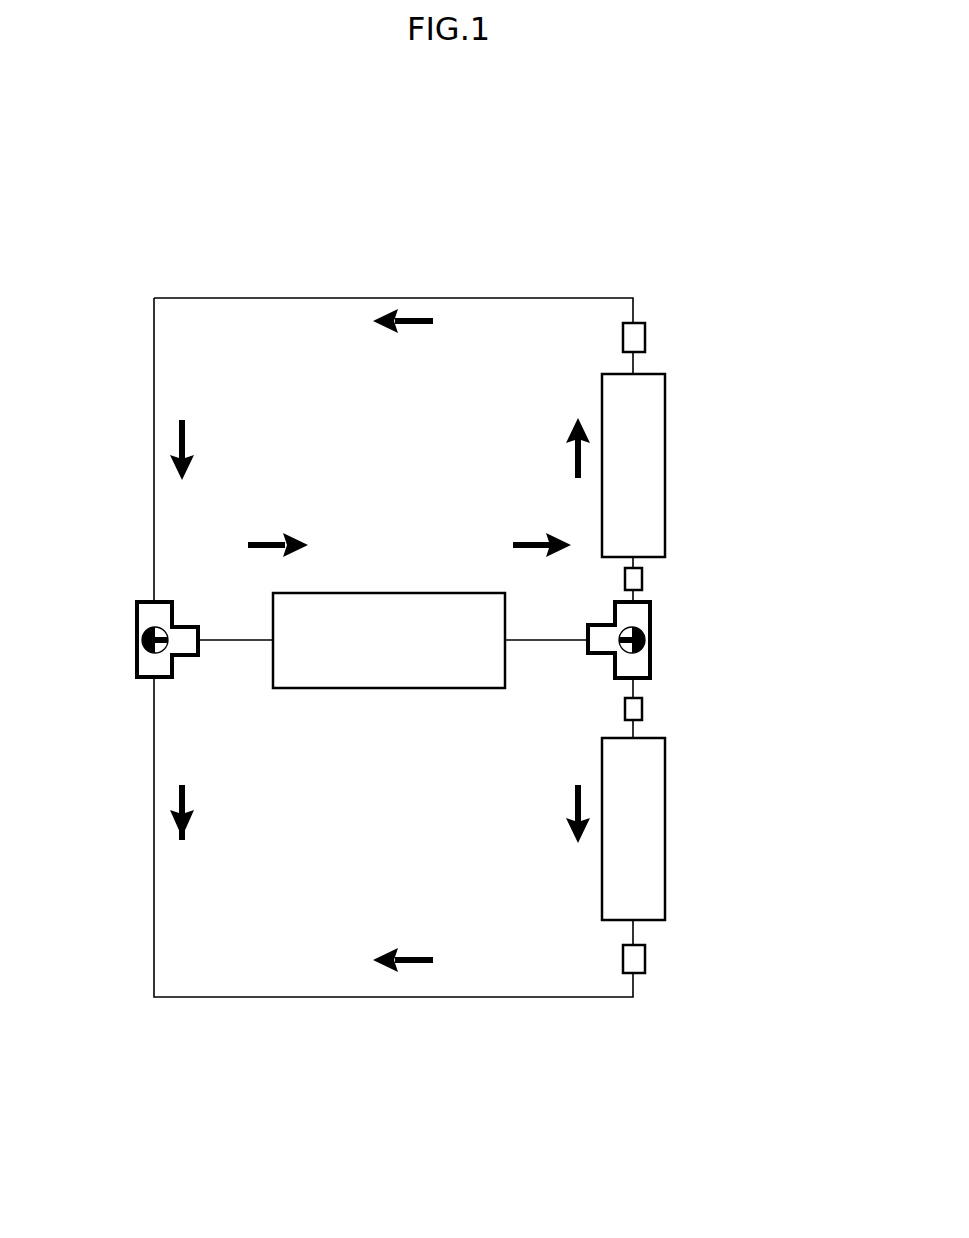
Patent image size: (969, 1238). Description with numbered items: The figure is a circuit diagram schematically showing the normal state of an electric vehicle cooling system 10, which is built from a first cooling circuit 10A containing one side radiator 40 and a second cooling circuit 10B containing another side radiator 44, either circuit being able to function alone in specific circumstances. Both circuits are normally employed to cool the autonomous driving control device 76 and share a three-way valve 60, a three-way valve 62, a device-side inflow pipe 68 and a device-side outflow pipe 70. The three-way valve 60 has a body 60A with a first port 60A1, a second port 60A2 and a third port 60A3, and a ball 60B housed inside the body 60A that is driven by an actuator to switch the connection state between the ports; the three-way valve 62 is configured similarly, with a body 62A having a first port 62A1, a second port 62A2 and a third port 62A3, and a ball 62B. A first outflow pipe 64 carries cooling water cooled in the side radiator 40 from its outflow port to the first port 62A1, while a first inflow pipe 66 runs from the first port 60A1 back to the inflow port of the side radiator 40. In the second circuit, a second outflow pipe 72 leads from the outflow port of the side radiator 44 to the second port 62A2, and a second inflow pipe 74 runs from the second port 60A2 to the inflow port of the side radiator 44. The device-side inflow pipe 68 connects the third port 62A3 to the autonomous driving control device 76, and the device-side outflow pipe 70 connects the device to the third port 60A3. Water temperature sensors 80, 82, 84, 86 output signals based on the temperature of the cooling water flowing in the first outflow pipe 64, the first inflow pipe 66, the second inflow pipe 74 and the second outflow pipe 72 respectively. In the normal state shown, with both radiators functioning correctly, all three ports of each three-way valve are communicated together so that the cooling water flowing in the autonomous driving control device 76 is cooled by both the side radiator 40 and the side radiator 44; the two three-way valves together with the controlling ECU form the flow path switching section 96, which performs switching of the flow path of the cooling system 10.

The cooling system 10 is at (757, 365).
The first cooling circuit 10A is at (513, 297).
The second cooling circuit 10B is at (503, 1000).
The side radiator 40 is at (668, 468).
The side radiator 44 is at (668, 839).
The three-way valve 60 is at (648, 632).
The body 60A is at (655, 668).
The first port 60A1 is at (648, 612).
The second port 60A2 is at (640, 680).
The third port 60A3 is at (585, 633).
The ball 60B is at (640, 630).
The three-way valve 62 is at (154, 642).
The body 62A is at (135, 617).
The first port 62A1 is at (145, 600).
The second port 62A2 is at (162, 678).
The third port 62A3 is at (200, 655).
The ball 62B is at (147, 655).
The first outflow pipe 64 is at (305, 298).
The first inflow pipe 66 is at (640, 563).
The device-side inflow pipe 68 is at (260, 640).
The device-side outflow pipe 70 is at (530, 642).
The second outflow pipe 72 is at (298, 998).
The second inflow pipe 74 is at (640, 730).
The autonomous driving control device 76 is at (415, 592).
The water temperature sensor 80 is at (622, 343).
The water temperature sensor 82 is at (625, 578).
The water temperature sensor 84 is at (625, 708).
The water temperature sensor 86 is at (622, 960).
The flow path switching section 96 is at (780, 598).